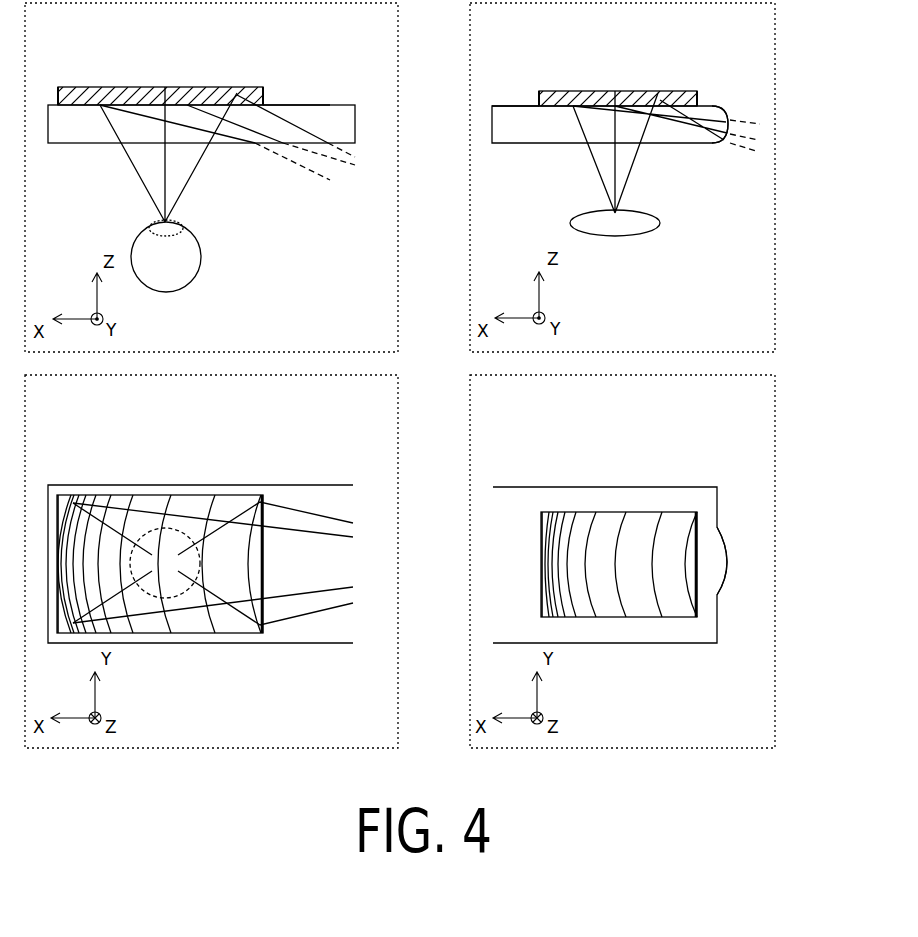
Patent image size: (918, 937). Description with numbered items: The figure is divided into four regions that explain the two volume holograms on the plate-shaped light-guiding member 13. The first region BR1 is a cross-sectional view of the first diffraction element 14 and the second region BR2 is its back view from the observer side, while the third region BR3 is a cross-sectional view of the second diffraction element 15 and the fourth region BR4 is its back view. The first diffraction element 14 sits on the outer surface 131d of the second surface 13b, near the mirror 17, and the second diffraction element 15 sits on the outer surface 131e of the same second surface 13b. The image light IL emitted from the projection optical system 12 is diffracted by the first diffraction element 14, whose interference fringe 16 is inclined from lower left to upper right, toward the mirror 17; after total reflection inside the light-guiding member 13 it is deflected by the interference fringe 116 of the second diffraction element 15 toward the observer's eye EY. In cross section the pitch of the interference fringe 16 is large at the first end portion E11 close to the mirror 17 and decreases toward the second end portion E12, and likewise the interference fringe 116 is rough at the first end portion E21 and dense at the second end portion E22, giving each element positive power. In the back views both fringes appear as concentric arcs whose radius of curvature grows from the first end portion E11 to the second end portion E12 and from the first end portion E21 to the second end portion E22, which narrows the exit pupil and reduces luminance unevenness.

The projection optical system 12 is at (650, 224).
The light-guiding member 13 is at (340, 135).
The second surface 13b is at (332, 105).
The first diffraction element 14 is at (690, 100).
The second diffraction element 15 is at (240, 87).
The interference fringe 16 is at (645, 97).
The mirror 17 is at (727, 130).
The interference fringe 116 is at (197, 90).
The outer surface 131d is at (585, 102).
The outer surface 131e is at (137, 100).
The first end portion E11 is at (698, 102).
The second end portion E12 is at (541, 100).
The first end portion E21 is at (265, 95).
The second end portion E22 is at (60, 100).
The observer's eye EY is at (205, 282).
The image light IL is at (168, 167).
The first region BR1 is at (777, 80).
The second region BR2 is at (778, 455).
The third region BR3 is at (400, 80).
The fourth region BR4 is at (400, 455).